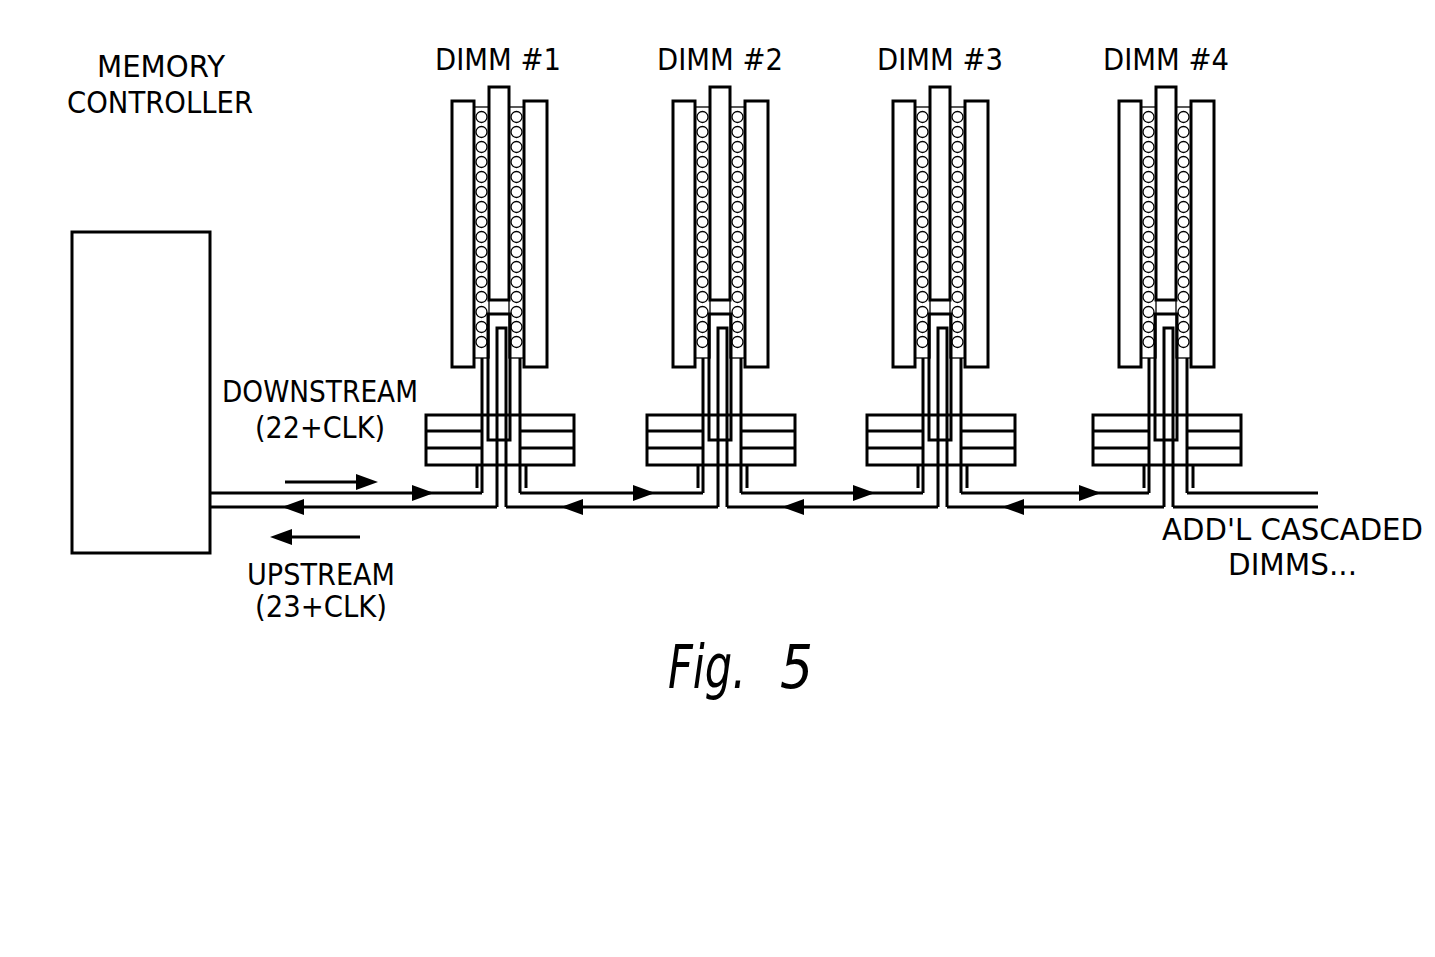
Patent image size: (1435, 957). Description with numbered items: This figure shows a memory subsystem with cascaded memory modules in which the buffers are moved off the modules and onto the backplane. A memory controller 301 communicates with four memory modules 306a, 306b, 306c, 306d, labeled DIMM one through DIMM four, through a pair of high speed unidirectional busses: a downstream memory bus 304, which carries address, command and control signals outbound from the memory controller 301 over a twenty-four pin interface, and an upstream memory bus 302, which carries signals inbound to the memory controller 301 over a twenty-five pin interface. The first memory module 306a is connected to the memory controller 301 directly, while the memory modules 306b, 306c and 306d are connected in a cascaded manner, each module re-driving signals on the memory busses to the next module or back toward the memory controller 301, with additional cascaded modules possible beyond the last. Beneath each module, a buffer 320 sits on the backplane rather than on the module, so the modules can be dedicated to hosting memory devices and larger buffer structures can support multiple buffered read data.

The memory controller 301 is at (170, 231).
The upstream memory bus 302 is at (468, 508).
The downstream memory bus 304 is at (598, 490).
The memory module 306a is at (547, 193).
The memory module 306b is at (763, 263).
The memory module 306c is at (983, 263).
The memory module 306d is at (1209, 263).
The buffer 320 is at (557, 414).